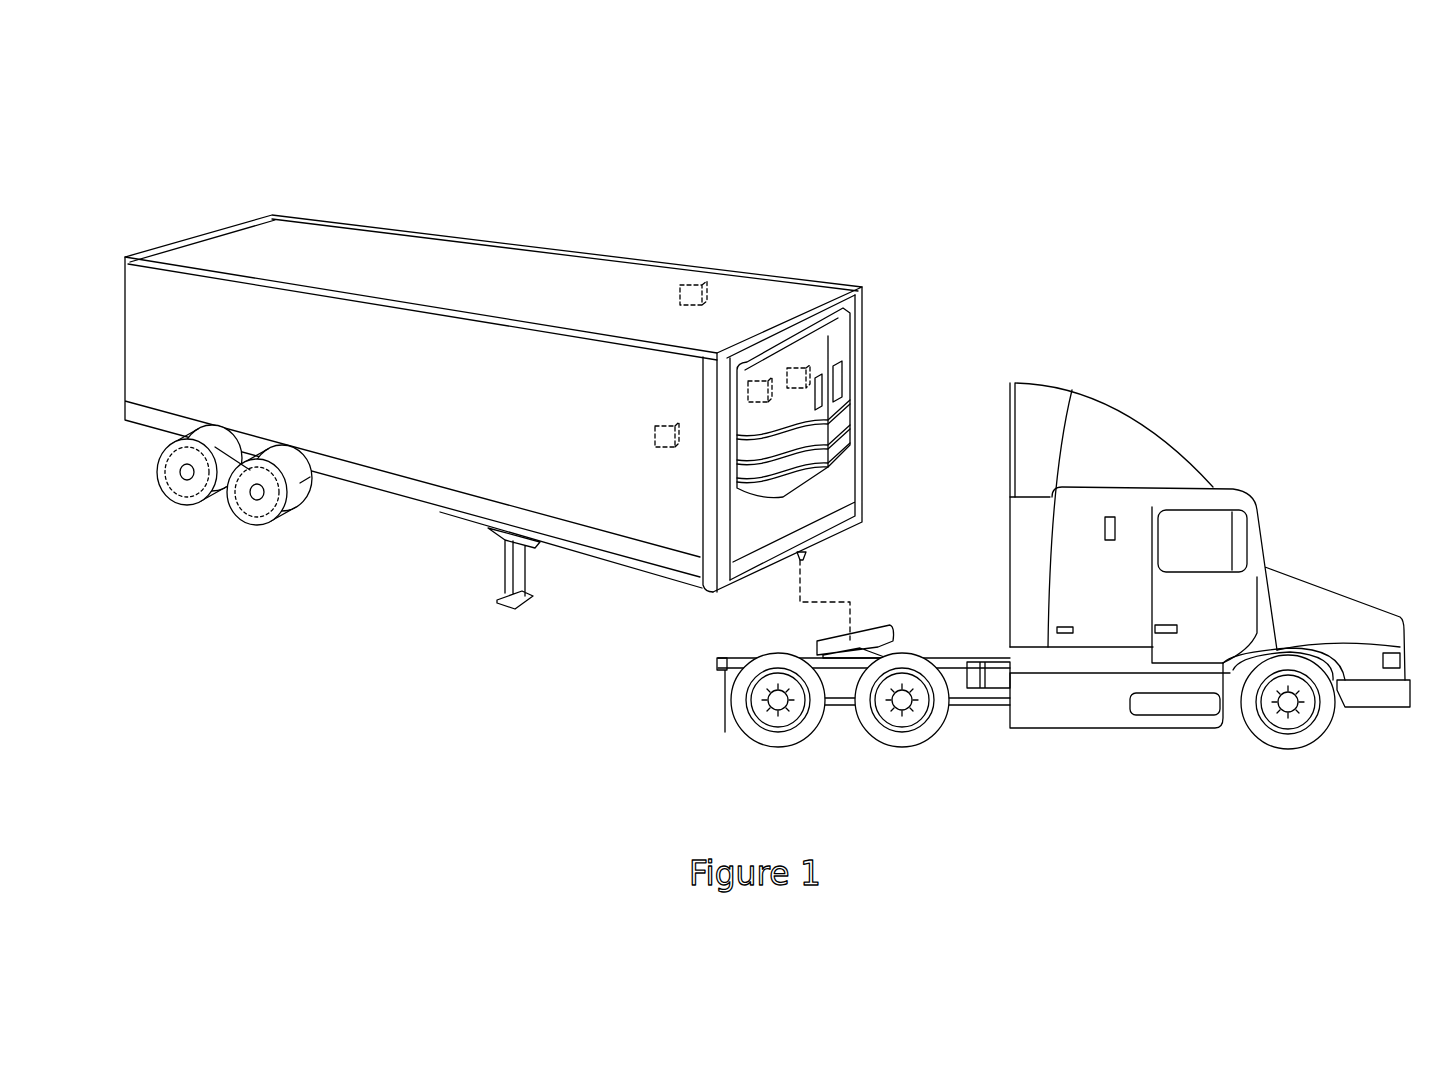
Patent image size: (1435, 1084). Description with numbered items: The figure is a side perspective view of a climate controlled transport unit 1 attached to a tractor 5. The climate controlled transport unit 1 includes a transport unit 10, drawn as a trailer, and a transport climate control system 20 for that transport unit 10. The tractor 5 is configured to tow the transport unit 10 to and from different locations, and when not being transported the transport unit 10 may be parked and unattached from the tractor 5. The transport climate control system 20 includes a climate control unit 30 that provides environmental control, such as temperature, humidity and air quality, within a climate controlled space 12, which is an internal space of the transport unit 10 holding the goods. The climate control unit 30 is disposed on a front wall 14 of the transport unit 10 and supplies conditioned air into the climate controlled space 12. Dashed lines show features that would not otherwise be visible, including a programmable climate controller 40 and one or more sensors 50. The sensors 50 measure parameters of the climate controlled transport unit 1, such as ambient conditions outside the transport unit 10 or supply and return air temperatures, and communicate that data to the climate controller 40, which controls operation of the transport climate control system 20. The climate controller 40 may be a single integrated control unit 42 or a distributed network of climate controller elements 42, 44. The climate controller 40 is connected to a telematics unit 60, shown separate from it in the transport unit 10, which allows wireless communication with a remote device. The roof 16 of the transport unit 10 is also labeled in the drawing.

The climate controlled transport unit 1 is at (233, 132).
The tractor 5 is at (1188, 428).
The transport unit 10 is at (600, 255).
The climate controlled space 12 is at (455, 473).
The front wall 14 is at (847, 468).
The roof 16 is at (452, 253).
The transport climate control system 20 is at (872, 273).
The climate control unit 30 is at (842, 347).
The climate controller 40 is at (712, 636).
The climate controller element 42 is at (660, 448).
The climate controller element 44 is at (758, 402).
The sensor 50 is at (697, 283).
The telematics unit 60 is at (798, 363).